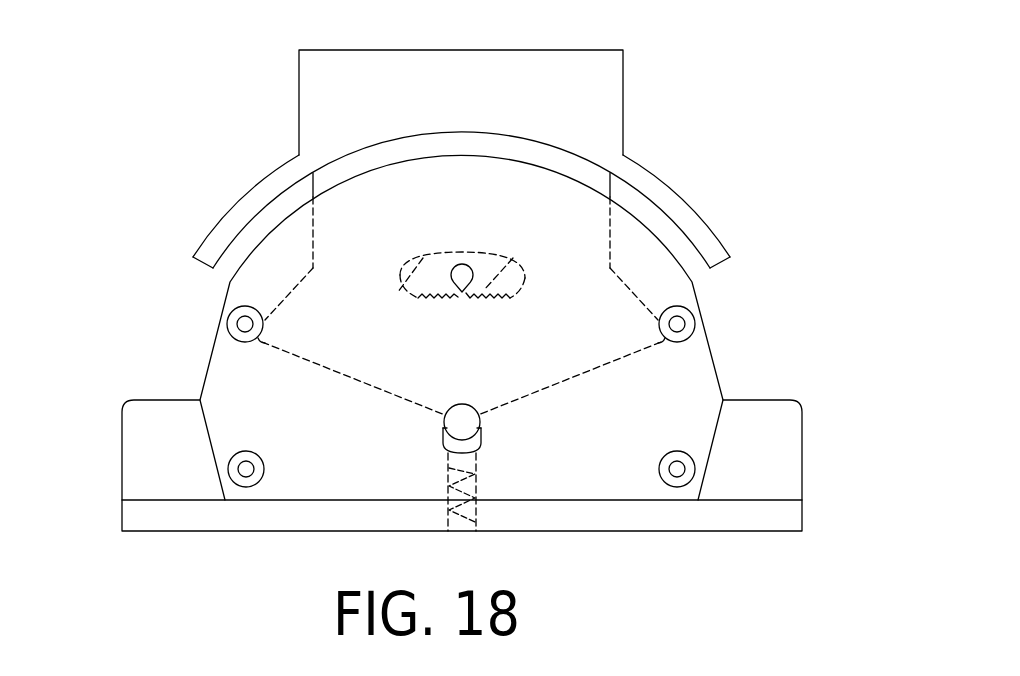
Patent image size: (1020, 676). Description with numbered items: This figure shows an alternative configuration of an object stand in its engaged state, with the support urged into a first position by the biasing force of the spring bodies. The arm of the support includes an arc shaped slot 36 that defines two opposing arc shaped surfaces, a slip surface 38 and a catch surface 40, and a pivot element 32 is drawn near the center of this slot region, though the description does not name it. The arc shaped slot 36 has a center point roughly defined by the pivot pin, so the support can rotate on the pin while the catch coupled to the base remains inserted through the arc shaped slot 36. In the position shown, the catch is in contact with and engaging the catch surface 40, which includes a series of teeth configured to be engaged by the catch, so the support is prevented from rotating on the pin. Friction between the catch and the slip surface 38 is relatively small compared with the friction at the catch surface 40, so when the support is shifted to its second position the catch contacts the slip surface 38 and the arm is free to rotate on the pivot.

The pivot pin 32 is at (462, 270).
The catch surface 40 is at (512, 254).
The slip surface 38 is at (400, 289).
The arc shaped slot 36 is at (523, 292).